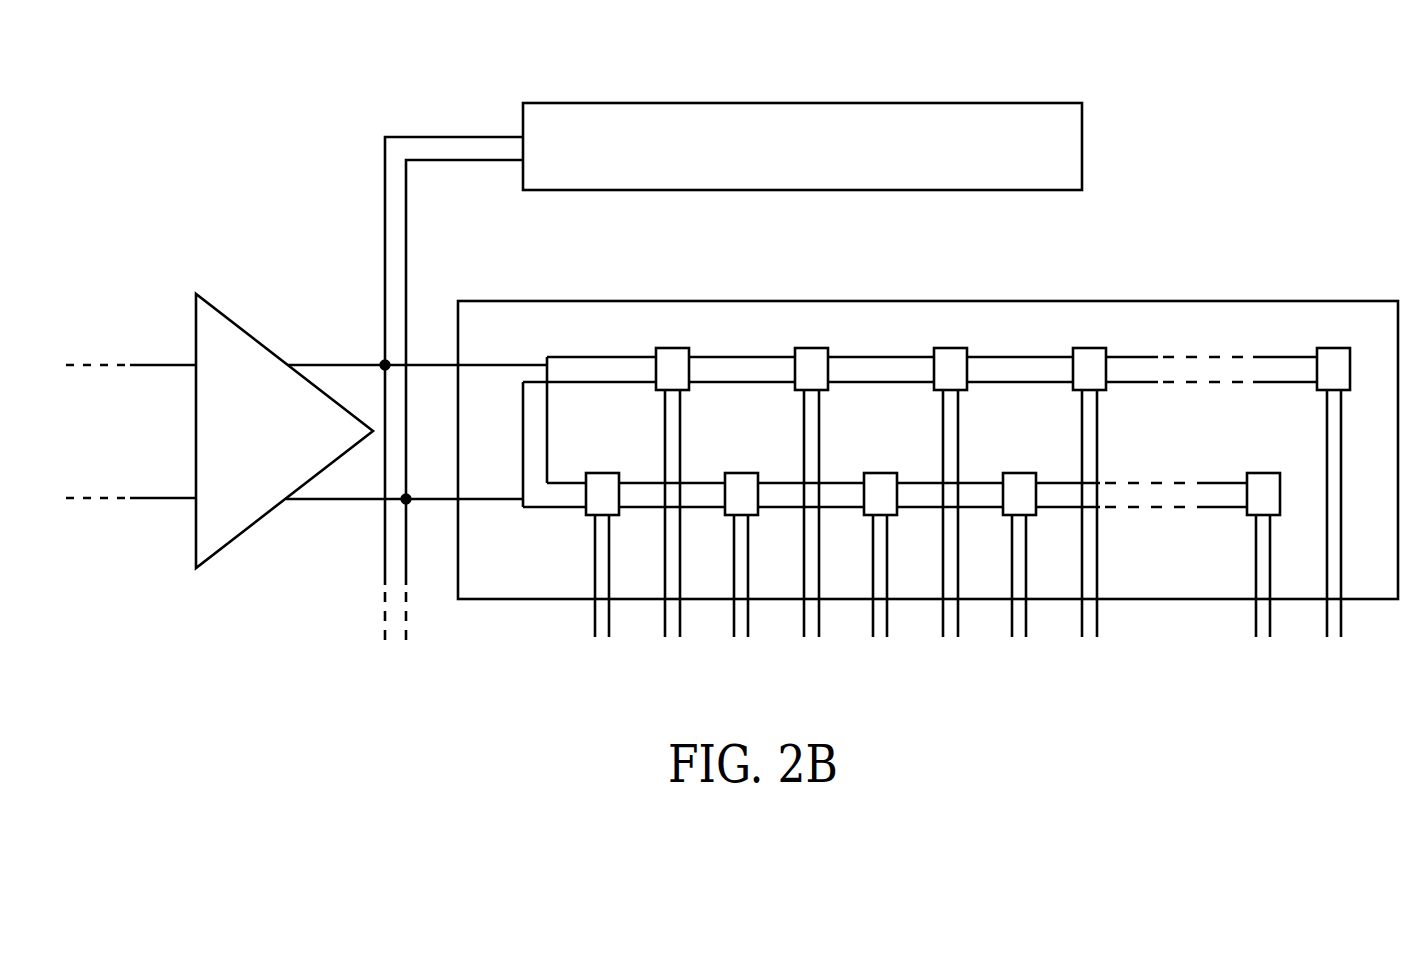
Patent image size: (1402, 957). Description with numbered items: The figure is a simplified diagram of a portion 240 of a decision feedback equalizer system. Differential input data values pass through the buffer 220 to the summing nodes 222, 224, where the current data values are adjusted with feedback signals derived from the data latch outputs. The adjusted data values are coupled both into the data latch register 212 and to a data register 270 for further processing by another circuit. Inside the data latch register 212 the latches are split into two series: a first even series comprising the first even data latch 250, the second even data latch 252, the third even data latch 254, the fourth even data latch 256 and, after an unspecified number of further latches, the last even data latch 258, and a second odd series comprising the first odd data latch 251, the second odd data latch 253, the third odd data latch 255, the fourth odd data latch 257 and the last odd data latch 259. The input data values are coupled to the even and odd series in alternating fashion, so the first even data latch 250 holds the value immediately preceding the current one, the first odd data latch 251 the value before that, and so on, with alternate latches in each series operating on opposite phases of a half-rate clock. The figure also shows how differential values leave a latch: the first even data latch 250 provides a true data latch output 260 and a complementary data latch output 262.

The data register 270 is at (1000, 103).
The portion of the DFE system 240 is at (1252, 137).
The data latch register 212 is at (1190, 301).
The buffer 220 is at (243, 327).
The summing node 222 is at (385, 365).
The summing node 224 is at (406, 499).
The even_0 data latch 250 is at (585, 515).
The odd_0 data latch 251 is at (690, 391).
The even_1 data latch 252 is at (759, 516).
The odd_1 data latch 253 is at (829, 391).
The even_2 data latch 254 is at (898, 516).
The odd_2 data latch 255 is at (968, 391).
The even_3 data latch 256 is at (1037, 516).
The odd_3 data latch 257 is at (1107, 391).
The even_N data latch 258 is at (1246, 515).
The odd_N data latch 259 is at (1316, 391).
The even_0 data latch output 260 is at (593, 613).
The even_0-bar data latch output 262 is at (611, 613).